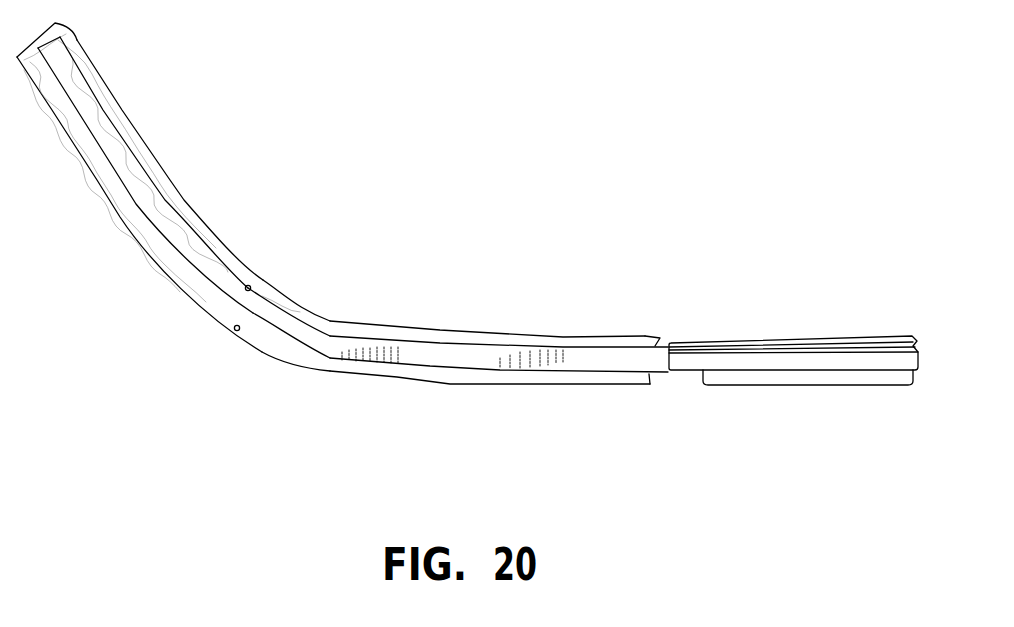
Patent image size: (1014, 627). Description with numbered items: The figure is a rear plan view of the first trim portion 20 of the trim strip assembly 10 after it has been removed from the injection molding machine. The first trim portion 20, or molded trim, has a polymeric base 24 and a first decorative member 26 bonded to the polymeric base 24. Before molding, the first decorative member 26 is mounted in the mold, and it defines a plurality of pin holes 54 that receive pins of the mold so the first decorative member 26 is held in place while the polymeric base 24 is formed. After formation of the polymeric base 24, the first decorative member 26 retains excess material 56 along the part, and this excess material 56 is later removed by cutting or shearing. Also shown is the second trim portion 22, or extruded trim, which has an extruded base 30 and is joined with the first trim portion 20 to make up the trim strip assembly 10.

The trim strip assembly 10 is at (708, 103).
The first trim portion 20 is at (264, 278).
The second trim portion 22 is at (758, 333).
The polymeric base 24 is at (443, 358).
The first decorative member 26 is at (327, 325).
The extruded base 30 is at (813, 358).
The pin holes 54 is at (248, 285).
The excess material 56 is at (174, 190).